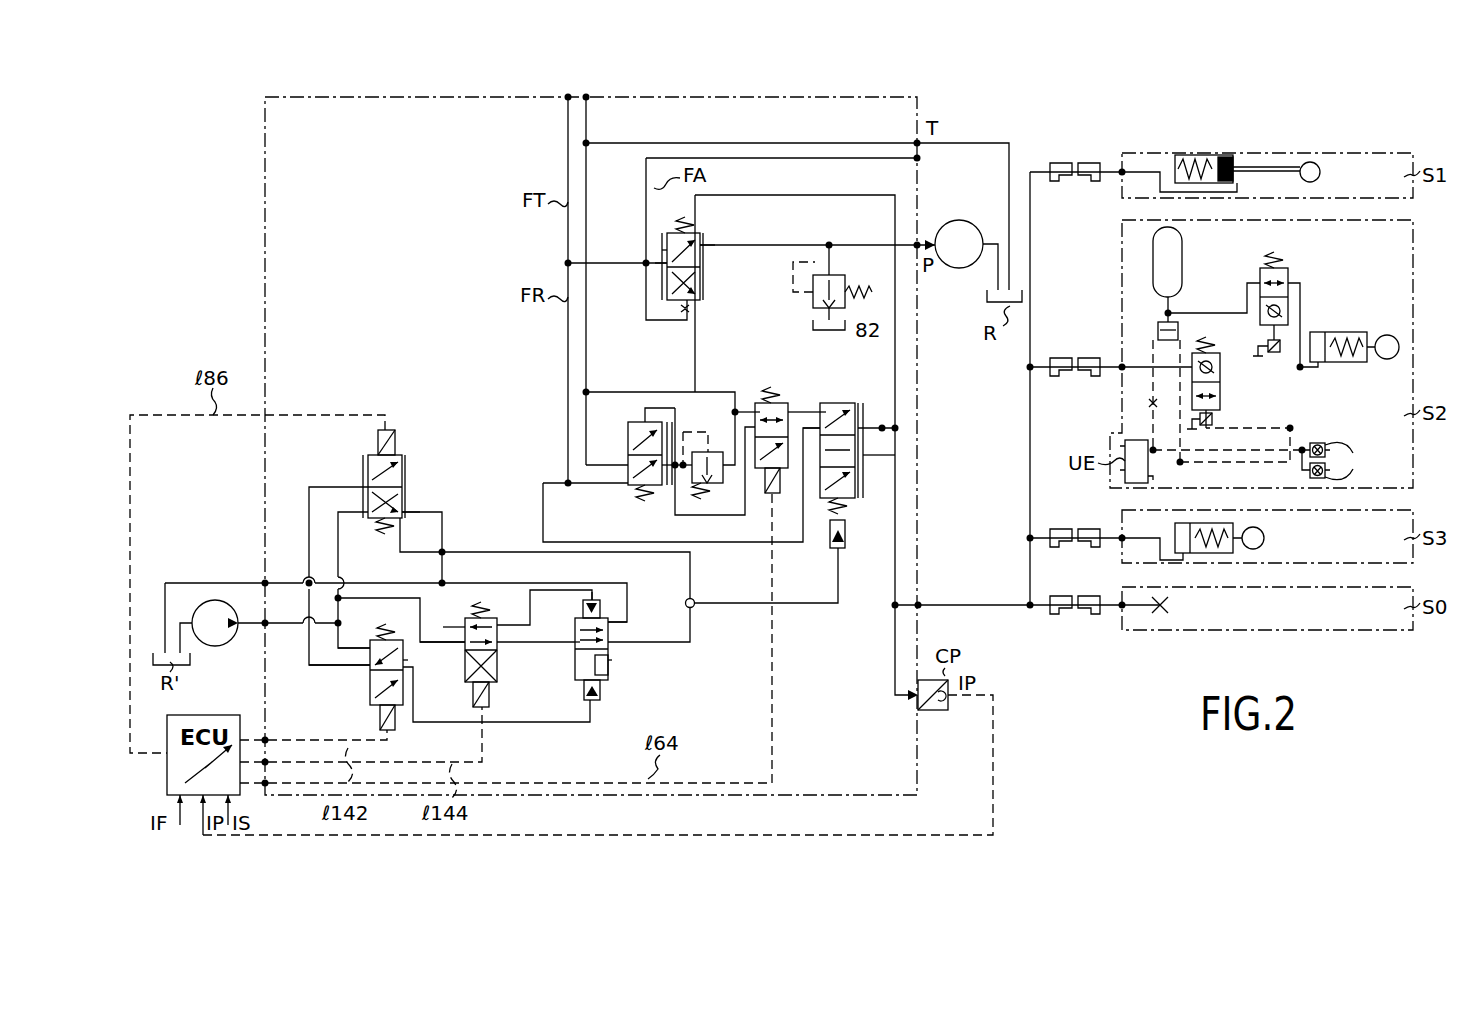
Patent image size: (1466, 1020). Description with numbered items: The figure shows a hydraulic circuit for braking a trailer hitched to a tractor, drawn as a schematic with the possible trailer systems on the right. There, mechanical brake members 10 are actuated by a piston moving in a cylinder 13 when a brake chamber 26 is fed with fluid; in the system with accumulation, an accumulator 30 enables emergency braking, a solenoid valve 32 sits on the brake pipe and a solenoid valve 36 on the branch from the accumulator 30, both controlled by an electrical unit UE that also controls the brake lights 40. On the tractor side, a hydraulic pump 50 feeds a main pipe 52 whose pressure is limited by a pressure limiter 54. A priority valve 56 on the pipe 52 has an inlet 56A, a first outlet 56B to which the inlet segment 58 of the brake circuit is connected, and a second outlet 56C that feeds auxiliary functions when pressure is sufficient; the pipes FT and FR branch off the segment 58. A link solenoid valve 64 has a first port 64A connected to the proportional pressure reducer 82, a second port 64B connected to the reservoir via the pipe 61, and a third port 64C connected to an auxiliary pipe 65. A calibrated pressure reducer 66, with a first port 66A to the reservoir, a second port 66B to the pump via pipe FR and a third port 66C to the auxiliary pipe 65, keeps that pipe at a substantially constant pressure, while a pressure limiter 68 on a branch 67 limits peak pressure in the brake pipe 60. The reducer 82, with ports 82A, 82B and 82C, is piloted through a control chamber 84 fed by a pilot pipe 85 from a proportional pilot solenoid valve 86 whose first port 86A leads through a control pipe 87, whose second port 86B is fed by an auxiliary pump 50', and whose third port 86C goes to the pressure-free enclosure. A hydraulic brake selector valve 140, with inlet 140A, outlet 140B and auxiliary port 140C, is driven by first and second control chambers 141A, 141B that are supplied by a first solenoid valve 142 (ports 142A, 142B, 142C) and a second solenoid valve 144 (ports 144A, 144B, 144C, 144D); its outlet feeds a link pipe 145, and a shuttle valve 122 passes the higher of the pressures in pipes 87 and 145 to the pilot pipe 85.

The mechanical brake member 10 is at (1320, 172).
The cylinder 13 is at (1176, 164).
The brake chamber 26 is at (1176, 528).
The accumulator 30 is at (1182, 256).
The solenoid valve 32 is at (1220, 384).
The solenoid valve 36 is at (1288, 280).
The brake lights 40 is at (1337, 460).
The hydraulic pump 50 is at (966, 239).
The pump 50' is at (261, 640).
The main pipe 52 is at (784, 246).
The pressure limiter 54 is at (843, 264).
The priority valve 56 is at (706, 268).
The inlet 56A is at (700, 242).
The first outlet 56B is at (664, 267).
The second outlet 56C is at (660, 240).
The inlet segment 58 is at (617, 263).
The brake pipe 60 is at (971, 606).
The pipe 61 is at (586, 366).
The solenoid valve 64 is at (757, 500).
The first port 64A is at (798, 412).
The second port 64B is at (758, 412).
The third port 64C is at (742, 406).
The auxiliary pipe 65 is at (729, 516).
The calibrated pressure reducer 66 is at (621, 505).
The first port 66A is at (628, 447).
The second port 66B is at (628, 478).
The third port 66C is at (684, 496).
The branch 67 is at (736, 432).
The pressure limiter 68 is at (688, 524).
The proportional pressure reducer 82 is at (868, 411).
The port 82A is at (846, 372).
The port 82B is at (820, 435).
The port 82C is at (897, 455).
The control chamber 84 is at (845, 546).
The pilot pipe 85 is at (838, 582).
The proportional pilot solenoid valve 86 is at (405, 440).
The first port 86A is at (402, 508).
The second port 86B is at (364, 515).
The third port 86C is at (368, 487).
The control pipe 87 is at (502, 552).
The shuttle valve 122 is at (697, 608).
The hydraulic brake selector valve 140 is at (612, 672).
The inlet 140A is at (577, 646).
The outlet 140B is at (608, 649).
The auxiliary port 140C is at (612, 622).
The first control chamber 141A is at (596, 702).
The second control chamber 141B is at (588, 612).
The first solenoid valve 142 is at (362, 700).
The first port 142A is at (370, 650).
The second port 142B is at (368, 668).
The third port 142C is at (397, 661).
The second solenoid valve 144 is at (442, 630).
The first port 144A is at (466, 649).
The second port 144B is at (463, 626).
The third port 144C is at (512, 626).
The fourth port 144D is at (516, 642).
The link pipe 145 is at (693, 630).